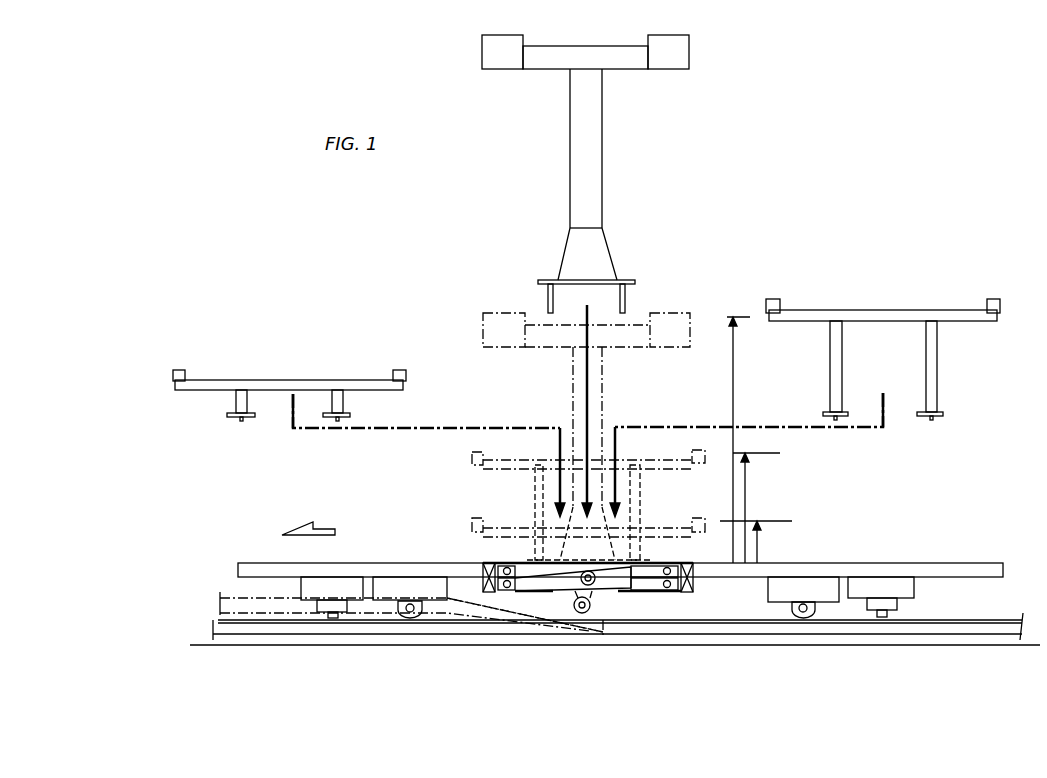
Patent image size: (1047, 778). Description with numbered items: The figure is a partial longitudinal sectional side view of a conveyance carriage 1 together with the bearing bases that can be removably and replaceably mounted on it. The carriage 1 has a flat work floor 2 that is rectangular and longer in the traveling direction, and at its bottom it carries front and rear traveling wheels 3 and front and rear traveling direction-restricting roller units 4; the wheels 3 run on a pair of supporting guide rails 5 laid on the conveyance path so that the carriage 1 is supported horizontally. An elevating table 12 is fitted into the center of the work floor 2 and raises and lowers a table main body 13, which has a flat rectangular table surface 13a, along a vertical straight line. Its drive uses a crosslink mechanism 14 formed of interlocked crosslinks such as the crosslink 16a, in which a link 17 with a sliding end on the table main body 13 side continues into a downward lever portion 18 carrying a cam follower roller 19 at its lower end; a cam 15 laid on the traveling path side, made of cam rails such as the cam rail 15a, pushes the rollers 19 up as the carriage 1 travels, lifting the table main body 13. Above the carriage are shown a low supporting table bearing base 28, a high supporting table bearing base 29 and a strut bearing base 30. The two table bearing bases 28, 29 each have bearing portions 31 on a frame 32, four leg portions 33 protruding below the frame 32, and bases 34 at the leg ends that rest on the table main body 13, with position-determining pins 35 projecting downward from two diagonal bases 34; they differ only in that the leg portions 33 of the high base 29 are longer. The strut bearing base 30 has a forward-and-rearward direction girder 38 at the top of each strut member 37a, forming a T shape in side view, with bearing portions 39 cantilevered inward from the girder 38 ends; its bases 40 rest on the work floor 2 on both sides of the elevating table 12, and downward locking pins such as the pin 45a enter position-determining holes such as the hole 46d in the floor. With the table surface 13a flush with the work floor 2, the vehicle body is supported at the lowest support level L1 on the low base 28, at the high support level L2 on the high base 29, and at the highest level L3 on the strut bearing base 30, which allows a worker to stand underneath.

The conveyance carriage 1 is at (948, 560).
The flat work floor 2 is at (385, 562).
The traveling wheels 3 is at (398, 607).
The traveling direction-restricting roller unit 4 is at (332, 622).
The supporting guide rails 5 is at (978, 627).
The elevating table 12 is at (656, 558).
The table main body 13 is at (505, 562).
The table surface 13a is at (655, 562).
The crosslink mechanism 14 is at (552, 562).
The cam 15 is at (235, 597).
The cam rail 15a is at (268, 607).
The crosslink 16a is at (607, 591).
The link 17 is at (530, 586).
The lever portion 18 is at (575, 597).
The cam follower roller 19 is at (598, 612).
The low supporting table bearing base 28 is at (270, 377).
The high supporting table bearing base 29 is at (885, 307).
The strut bearing base 30 is at (567, 158).
The bearing portions 31 is at (178, 369).
The frame 32 is at (313, 381).
The leg portions 33 is at (241, 400).
The bases 34 is at (232, 414).
The position-determining pins 35 is at (241, 421).
The strut member 37a is at (594, 160).
The forward-and-rearward direction girder 38 is at (553, 63).
The bearing portions 39 is at (497, 53).
The bases 40 is at (600, 282).
The position-determining and locking pin 45a is at (625, 300).
The position-determining hole 46d is at (548, 300).
The lowest support level L1 is at (756, 533).
The high support level L2 is at (756, 499).
The highest level L3 is at (728, 429).